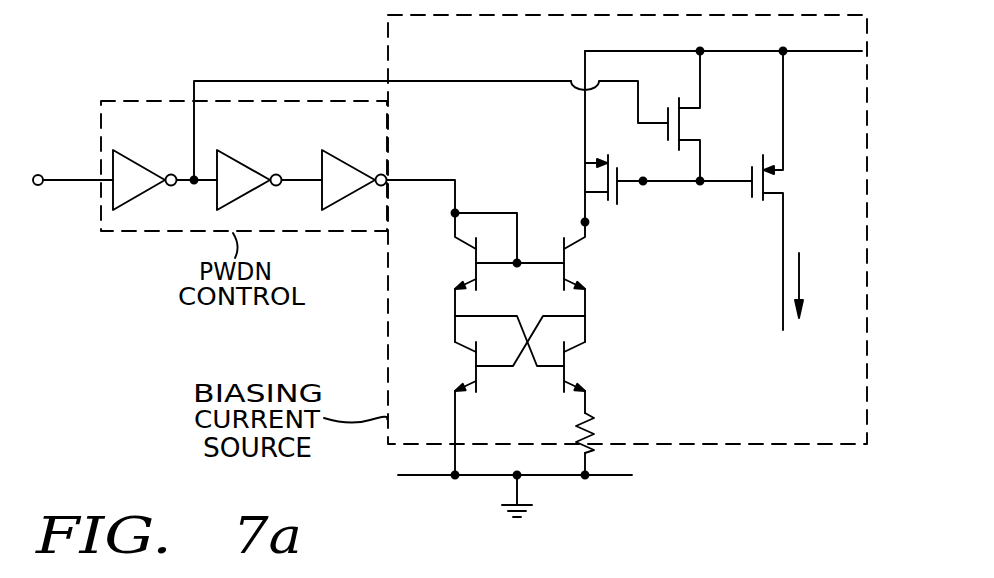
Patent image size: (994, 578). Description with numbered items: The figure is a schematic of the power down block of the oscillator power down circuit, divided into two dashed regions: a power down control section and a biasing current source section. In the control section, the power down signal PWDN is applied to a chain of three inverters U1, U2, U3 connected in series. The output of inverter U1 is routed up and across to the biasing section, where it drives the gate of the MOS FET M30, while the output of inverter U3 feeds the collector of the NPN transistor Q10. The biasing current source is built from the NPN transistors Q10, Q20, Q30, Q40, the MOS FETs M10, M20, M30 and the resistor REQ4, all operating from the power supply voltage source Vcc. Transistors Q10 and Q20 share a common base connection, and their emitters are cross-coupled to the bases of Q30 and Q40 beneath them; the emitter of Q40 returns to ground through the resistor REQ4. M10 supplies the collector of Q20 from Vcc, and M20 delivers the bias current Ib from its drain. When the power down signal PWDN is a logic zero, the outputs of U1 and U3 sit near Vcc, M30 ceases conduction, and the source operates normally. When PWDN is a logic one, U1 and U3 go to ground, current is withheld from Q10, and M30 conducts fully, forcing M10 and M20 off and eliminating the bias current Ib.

The power down signal PWDN is at (72, 170).
The inverter U1 is at (145, 171).
The inverter U2 is at (249, 171).
The inverter U3 is at (354, 171).
The power supply voltage source Vcc is at (723, 33).
The MOS FET M10 is at (583, 136).
The MOS FET M20 is at (804, 190).
The MOS FET M30 is at (715, 116).
The NPN transistor Q10 is at (444, 251).
The NPN transistor Q20 is at (602, 256).
The NPN transistor Q30 is at (444, 367).
The NPN transistor Q40 is at (602, 367).
The resistor REQ4 is at (623, 433).
The bias current Ib is at (818, 285).